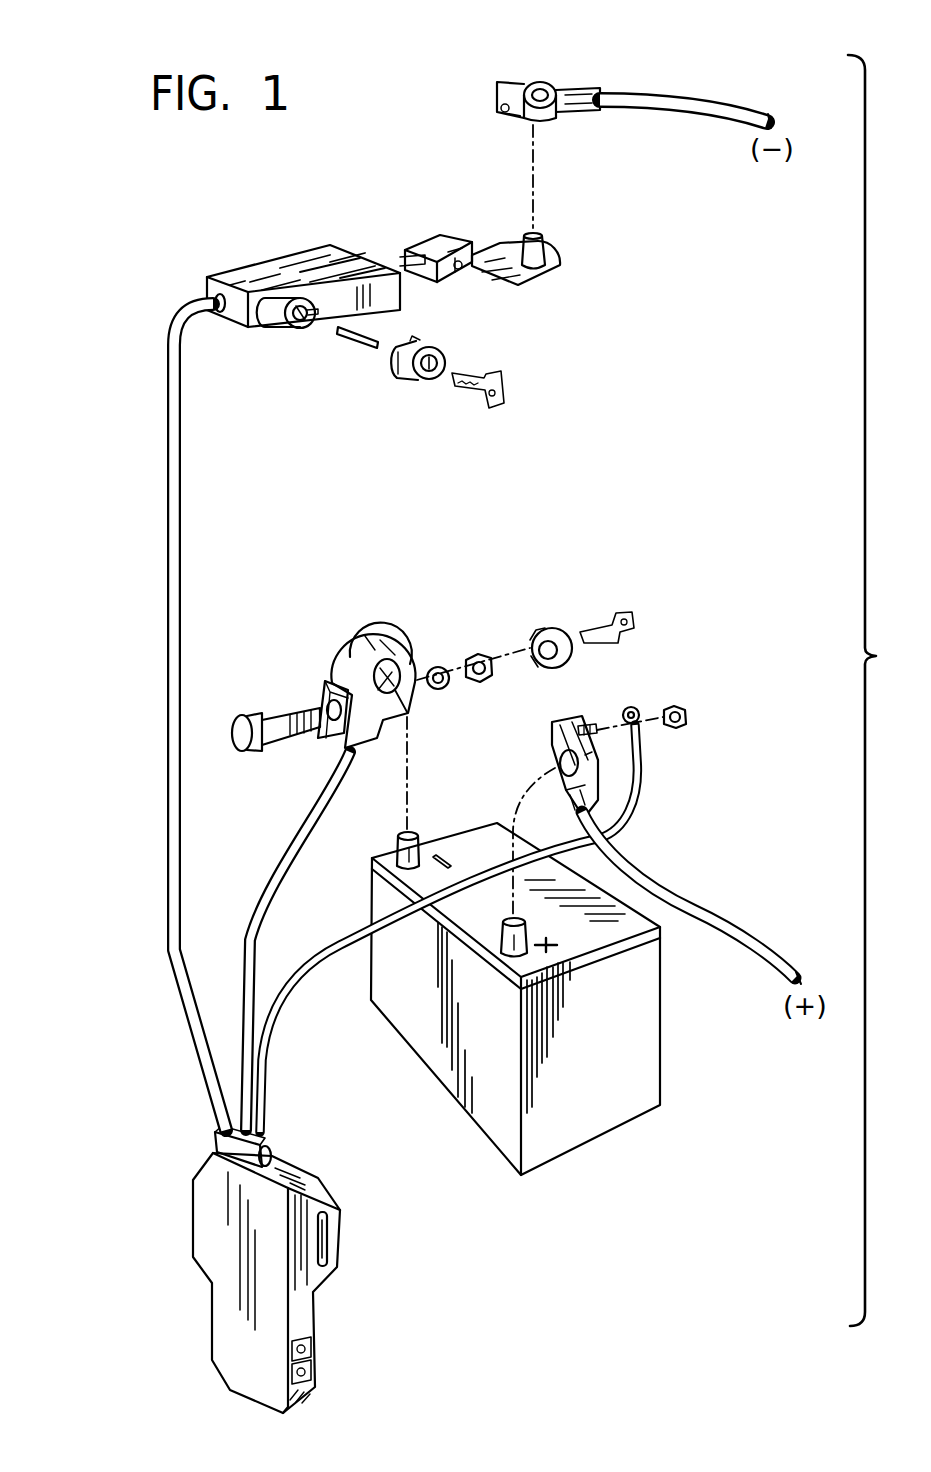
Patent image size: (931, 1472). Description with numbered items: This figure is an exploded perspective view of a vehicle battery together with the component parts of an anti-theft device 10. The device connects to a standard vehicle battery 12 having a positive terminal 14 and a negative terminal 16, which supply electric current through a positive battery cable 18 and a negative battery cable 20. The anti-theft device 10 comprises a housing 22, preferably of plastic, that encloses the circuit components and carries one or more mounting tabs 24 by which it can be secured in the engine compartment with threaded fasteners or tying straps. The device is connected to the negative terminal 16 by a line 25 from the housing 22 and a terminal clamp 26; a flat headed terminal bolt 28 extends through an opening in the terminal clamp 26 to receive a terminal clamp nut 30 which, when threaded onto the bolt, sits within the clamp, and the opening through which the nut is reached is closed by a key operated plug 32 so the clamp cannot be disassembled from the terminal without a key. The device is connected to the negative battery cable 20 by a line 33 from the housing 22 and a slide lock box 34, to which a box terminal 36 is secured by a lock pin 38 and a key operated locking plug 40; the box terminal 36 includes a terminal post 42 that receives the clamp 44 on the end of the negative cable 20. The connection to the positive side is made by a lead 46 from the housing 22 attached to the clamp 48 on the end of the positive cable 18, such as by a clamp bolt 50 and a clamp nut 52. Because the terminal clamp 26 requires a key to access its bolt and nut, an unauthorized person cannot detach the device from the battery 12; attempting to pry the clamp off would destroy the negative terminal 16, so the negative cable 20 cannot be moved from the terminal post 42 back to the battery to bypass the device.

The anti-theft device 10 is at (107, 328).
The vehicle battery 12 is at (588, 1128).
The positive terminal 14 is at (508, 950).
The negative terminal 16 is at (398, 848).
The positive battery cable 18 is at (693, 906).
The negative battery cable 20 is at (666, 100).
The housing 22 is at (200, 1215).
The mounting tab 24 is at (322, 1268).
The line 25 is at (286, 856).
The terminal clamp 26 is at (373, 631).
The terminal bolt 28 is at (272, 716).
The terminal clamp nut 30 is at (480, 652).
The key operated plug 32 is at (548, 626).
The line 33 is at (170, 545).
The slide lock box 34 is at (272, 275).
The box terminal 36 is at (428, 250).
The lock pin 38 is at (358, 344).
The key operated locking plug 40 is at (404, 368).
The terminal post 42 is at (548, 246).
The clamp 44 is at (543, 80).
The lead 46 is at (312, 970).
The clamp 48 is at (553, 757).
The clamp bolt 50 is at (597, 724).
The clamp nut 52 is at (680, 708).